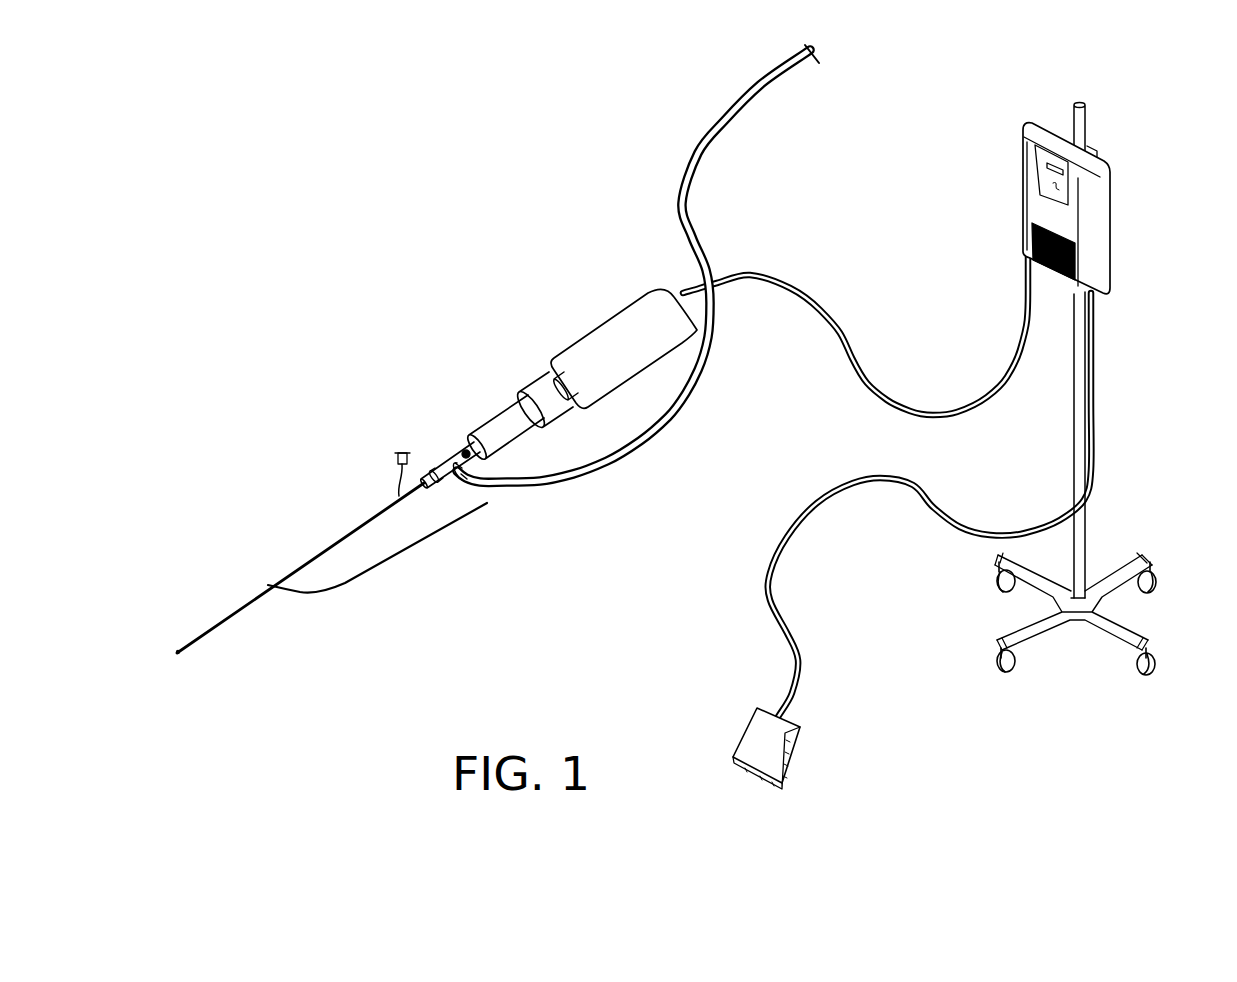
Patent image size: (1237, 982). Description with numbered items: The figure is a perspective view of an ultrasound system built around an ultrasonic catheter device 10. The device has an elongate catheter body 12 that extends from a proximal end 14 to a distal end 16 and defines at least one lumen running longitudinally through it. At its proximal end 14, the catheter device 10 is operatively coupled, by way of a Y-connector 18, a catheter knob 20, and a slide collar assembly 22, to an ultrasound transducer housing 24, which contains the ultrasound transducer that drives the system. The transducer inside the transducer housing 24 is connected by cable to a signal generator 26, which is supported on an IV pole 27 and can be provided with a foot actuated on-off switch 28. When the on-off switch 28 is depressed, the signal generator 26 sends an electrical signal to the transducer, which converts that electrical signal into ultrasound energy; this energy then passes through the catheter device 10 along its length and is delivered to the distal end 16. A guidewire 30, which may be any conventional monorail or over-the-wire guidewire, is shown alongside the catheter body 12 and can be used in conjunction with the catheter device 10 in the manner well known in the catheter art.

The ultrasonic catheter device 10 is at (332, 544).
The elongate catheter body 12 is at (288, 574).
The proximal end 14 is at (402, 492).
The distal end 16 is at (186, 648).
The Y-connector 18 is at (400, 496).
The catheter knob 20 is at (544, 379).
The slide collar assembly 22 is at (528, 362).
The ultrasound transducer housing 24 is at (635, 317).
The signal generator 26 is at (1110, 217).
The IV pole 27 is at (1080, 518).
The foot actuated on-off switch 28 is at (762, 755).
The guidewire 30 is at (403, 550).